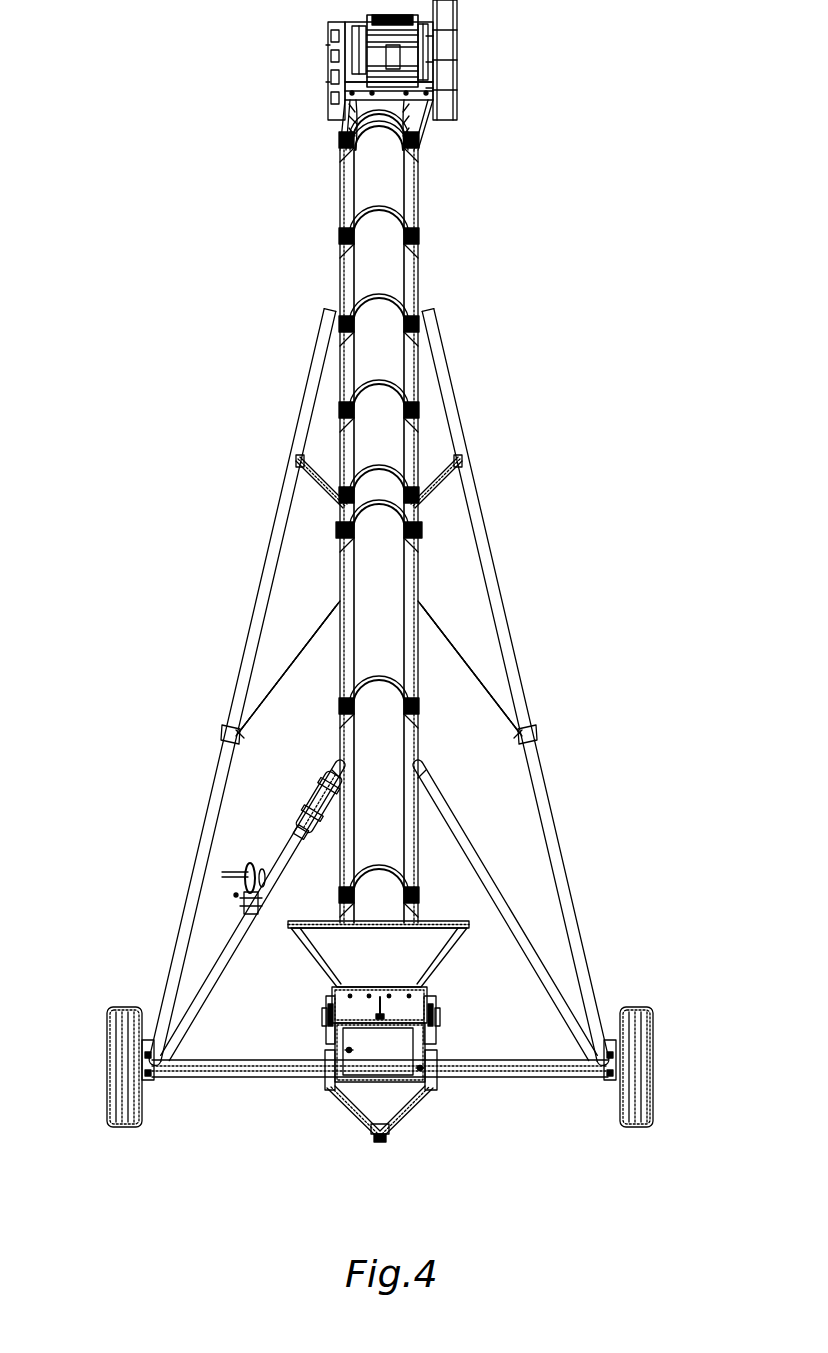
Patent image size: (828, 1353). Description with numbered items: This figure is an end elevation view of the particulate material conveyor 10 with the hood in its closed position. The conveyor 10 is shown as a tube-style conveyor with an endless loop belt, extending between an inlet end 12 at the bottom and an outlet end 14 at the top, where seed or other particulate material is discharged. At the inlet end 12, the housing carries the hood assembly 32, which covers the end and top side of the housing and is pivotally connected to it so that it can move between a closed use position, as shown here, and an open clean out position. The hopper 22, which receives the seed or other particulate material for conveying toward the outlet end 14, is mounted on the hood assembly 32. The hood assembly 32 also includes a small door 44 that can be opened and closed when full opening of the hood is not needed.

The particulate material conveyor 10 is at (248, 497).
The inlet end 12 is at (303, 983).
The outlet end 14 is at (312, 30).
The hopper 22 is at (440, 947).
The hood assembly 32 is at (407, 1007).
The small door 44 is at (388, 1053).